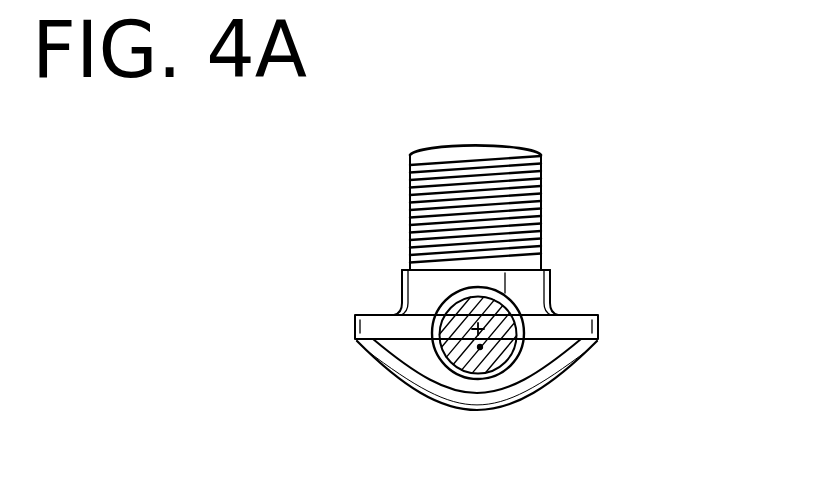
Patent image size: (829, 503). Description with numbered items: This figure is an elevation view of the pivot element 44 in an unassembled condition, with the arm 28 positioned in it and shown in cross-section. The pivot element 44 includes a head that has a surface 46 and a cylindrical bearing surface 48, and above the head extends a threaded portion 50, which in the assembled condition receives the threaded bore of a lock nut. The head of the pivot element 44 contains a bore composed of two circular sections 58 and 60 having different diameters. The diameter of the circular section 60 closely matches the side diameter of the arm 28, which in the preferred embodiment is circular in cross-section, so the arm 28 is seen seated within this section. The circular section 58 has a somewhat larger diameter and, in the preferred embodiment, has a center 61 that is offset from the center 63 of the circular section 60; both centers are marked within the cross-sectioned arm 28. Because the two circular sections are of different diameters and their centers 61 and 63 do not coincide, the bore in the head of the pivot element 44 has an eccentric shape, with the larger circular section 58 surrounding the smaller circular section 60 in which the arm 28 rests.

The threaded portion 50 is at (547, 213).
The cylindrical bearing surface 48 is at (553, 288).
The surface 46 is at (358, 316).
The pivot element 44 is at (600, 323).
The circular section 58 is at (440, 298).
The circular section 60 is at (510, 367).
The arm 28 is at (462, 363).
The center 61 is at (478, 329).
The center 63 is at (480, 348).